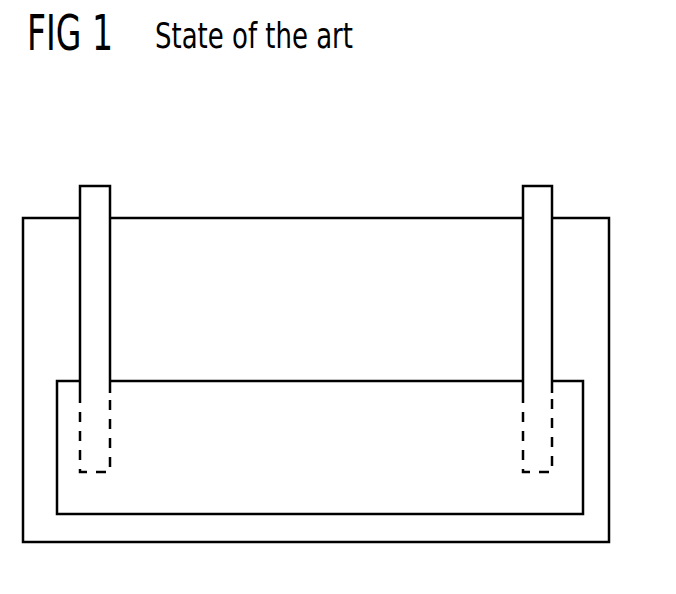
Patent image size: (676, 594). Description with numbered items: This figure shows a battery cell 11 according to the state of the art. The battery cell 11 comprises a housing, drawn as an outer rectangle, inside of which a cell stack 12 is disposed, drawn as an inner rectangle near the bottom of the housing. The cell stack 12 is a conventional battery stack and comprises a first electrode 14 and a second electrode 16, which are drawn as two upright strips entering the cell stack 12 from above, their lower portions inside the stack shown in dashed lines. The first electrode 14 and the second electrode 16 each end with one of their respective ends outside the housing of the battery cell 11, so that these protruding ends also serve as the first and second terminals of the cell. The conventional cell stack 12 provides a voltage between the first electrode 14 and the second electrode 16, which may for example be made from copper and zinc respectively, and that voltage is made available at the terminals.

The battery cell 11 is at (412, 133).
The cell stack 12 is at (247, 380).
The first electrode 14 is at (93, 186).
The second electrode 16 is at (535, 186).